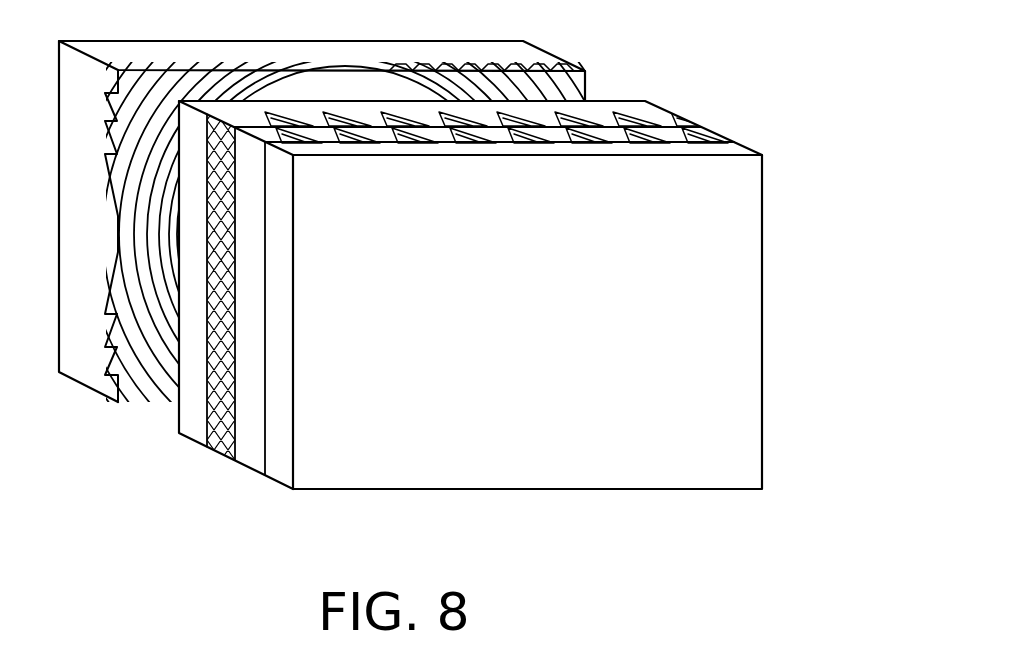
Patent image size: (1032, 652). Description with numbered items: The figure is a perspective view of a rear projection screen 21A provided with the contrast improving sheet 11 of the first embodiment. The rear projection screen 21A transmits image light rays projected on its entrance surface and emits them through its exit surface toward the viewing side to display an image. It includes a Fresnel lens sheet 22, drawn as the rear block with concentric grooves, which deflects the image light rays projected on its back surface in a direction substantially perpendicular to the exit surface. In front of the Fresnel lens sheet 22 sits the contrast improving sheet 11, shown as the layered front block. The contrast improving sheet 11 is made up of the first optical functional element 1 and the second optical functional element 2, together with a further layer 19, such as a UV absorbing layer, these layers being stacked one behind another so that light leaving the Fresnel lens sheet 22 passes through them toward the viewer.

The Fresnel lens sheet 22 is at (549, 53).
The contrast improving sheet 11 is at (826, 82).
The first optical functional element 1 is at (670, 96).
The second optical functional element 2 is at (728, 124).
The layer 19 is at (756, 140).
The rear projection screen 21A is at (915, 210).